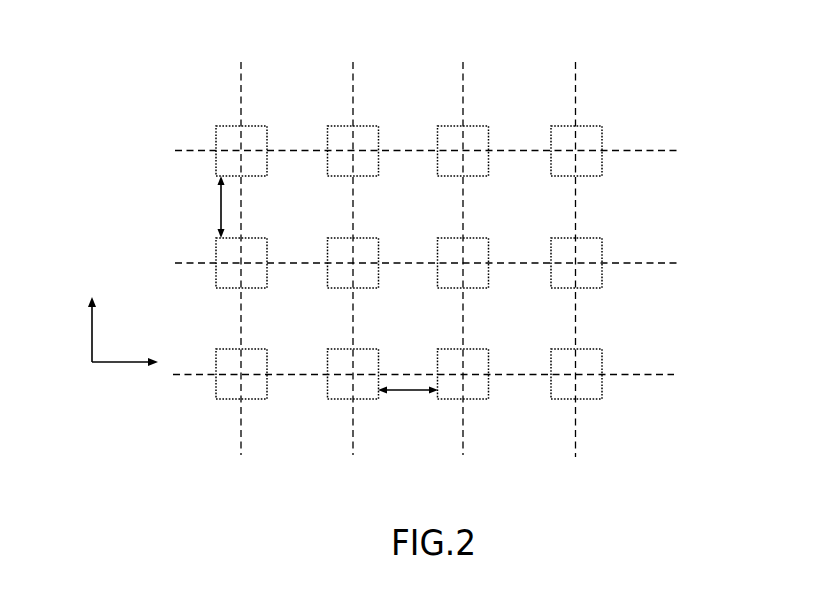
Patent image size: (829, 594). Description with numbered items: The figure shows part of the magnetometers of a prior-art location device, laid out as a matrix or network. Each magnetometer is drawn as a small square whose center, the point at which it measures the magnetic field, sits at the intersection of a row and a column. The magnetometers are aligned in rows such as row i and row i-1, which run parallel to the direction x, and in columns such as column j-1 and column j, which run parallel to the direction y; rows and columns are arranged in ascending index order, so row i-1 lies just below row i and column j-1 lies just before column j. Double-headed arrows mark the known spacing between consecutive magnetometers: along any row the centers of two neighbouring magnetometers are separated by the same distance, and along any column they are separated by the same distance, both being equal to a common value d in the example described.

The row i is at (677, 263).
The row i-1 is at (674, 374).
The column j-1 is at (241, 447).
The column j is at (353, 448).
The direction X x is at (125, 372).
The direction Y y is at (82, 327).